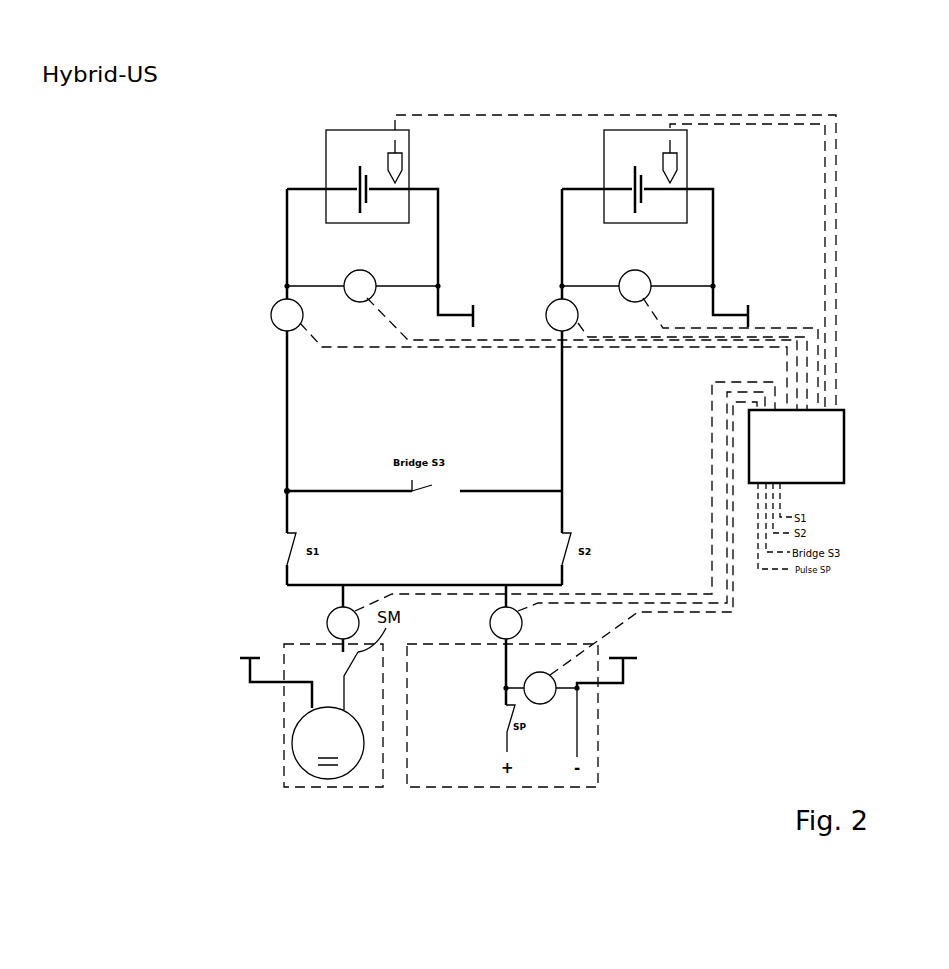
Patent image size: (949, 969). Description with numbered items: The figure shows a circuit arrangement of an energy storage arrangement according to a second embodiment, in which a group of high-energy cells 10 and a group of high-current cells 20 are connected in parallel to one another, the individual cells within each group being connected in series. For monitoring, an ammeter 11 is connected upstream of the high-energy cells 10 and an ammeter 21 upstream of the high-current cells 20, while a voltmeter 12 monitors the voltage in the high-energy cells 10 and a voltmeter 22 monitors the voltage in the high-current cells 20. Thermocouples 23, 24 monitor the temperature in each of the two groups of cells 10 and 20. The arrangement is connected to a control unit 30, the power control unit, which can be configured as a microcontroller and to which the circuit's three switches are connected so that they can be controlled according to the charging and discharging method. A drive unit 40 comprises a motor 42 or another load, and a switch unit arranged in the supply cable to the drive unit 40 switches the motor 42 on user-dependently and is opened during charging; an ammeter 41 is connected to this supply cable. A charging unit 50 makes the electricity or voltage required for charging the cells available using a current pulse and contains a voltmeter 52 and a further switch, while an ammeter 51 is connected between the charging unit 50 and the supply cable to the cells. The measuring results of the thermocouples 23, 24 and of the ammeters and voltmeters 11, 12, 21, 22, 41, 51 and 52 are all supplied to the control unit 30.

The high-energy cells 10 is at (328, 142).
The ammeter 11 is at (272, 312).
The voltmeter 12 is at (375, 285).
The high-current cells 20 is at (687, 130).
The ammeter 21 is at (547, 310).
The voltmeter 22 is at (650, 280).
The thermocouple 23 is at (402, 157).
The thermocouple 24 is at (675, 170).
The control unit 30 is at (845, 440).
The drive unit 40 is at (377, 789).
The ammeter 41 is at (330, 622).
The motor 42 is at (295, 730).
The charging unit 50 is at (598, 758).
The ammeter 51 is at (492, 623).
The voltmeter 52 is at (540, 705).